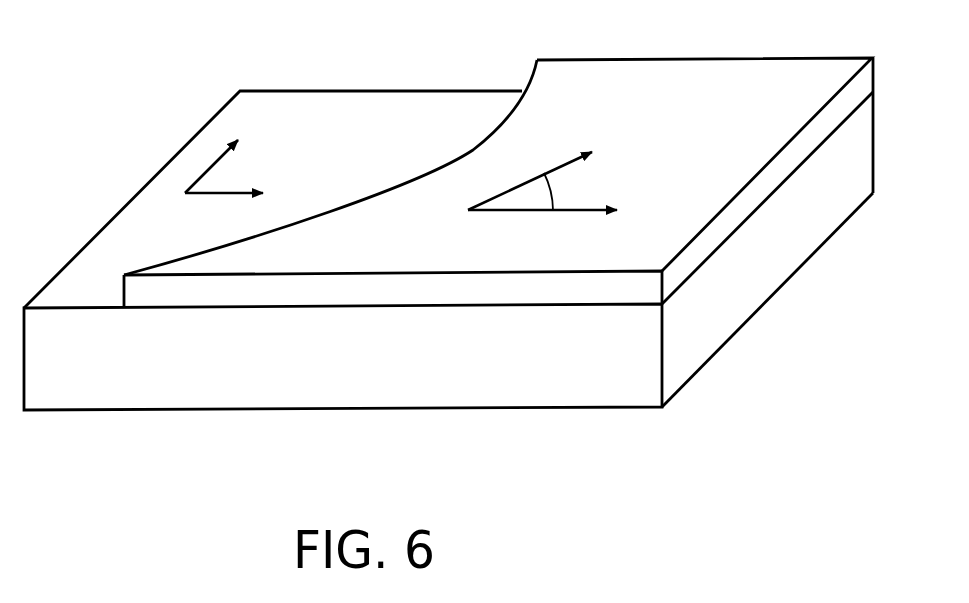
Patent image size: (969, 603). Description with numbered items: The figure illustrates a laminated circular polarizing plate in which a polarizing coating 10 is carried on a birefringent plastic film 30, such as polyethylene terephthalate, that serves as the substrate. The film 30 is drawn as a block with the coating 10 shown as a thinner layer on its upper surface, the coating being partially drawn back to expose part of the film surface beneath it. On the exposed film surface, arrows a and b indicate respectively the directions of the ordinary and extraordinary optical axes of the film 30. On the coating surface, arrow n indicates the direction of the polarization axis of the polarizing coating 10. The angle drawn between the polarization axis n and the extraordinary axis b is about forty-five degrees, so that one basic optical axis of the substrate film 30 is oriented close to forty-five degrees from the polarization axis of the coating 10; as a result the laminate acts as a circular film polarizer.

The polarizing coating 10 is at (610, 77).
The birefringent plastic film 30 is at (53, 397).
The ordinary axis direction a is at (217, 164).
The extraordinary axis direction b is at (410, 209).
The polarization axis direction n is at (530, 172).